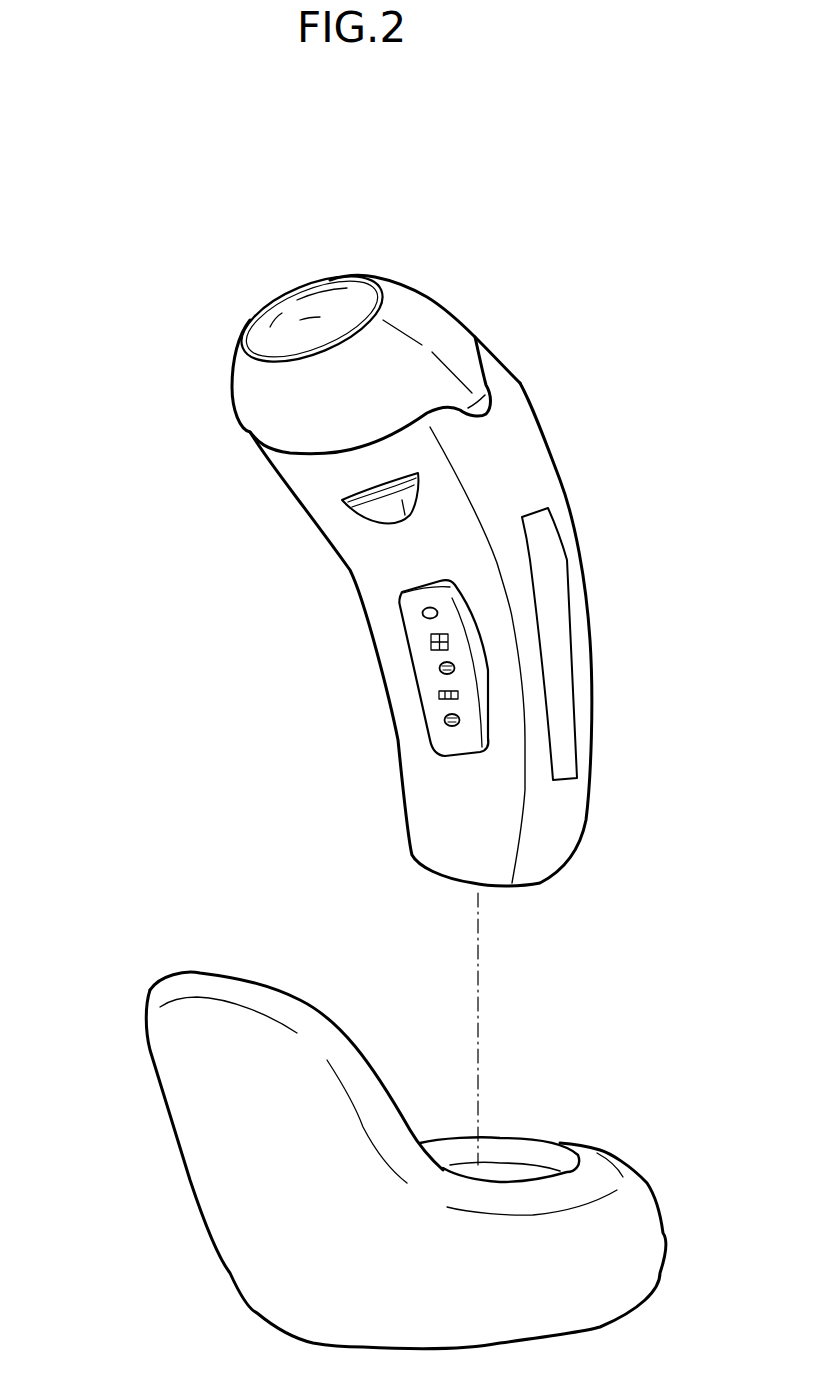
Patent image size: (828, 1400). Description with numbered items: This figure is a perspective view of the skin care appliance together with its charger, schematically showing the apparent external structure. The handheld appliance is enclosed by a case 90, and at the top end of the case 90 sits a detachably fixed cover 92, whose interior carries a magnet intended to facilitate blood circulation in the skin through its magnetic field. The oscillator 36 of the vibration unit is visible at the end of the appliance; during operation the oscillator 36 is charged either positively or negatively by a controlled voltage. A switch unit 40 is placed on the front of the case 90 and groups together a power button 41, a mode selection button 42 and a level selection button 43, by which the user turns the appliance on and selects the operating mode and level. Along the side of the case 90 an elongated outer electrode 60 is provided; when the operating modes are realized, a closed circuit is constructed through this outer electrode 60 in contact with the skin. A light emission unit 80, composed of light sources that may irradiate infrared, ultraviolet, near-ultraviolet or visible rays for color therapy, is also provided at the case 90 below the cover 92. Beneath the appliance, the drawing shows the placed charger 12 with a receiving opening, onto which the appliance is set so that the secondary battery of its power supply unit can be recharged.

The charger 12 is at (183, 1223).
The oscillator 36 is at (305, 290).
The switch unit 40 is at (490, 645).
The power button 41 is at (423, 615).
The mode selection button 42 is at (440, 668).
The level selection button 43 is at (446, 721).
The outer electrode 60 is at (577, 573).
The light emission unit 80 is at (357, 507).
The case 90 is at (527, 442).
The cover 92 is at (433, 318).